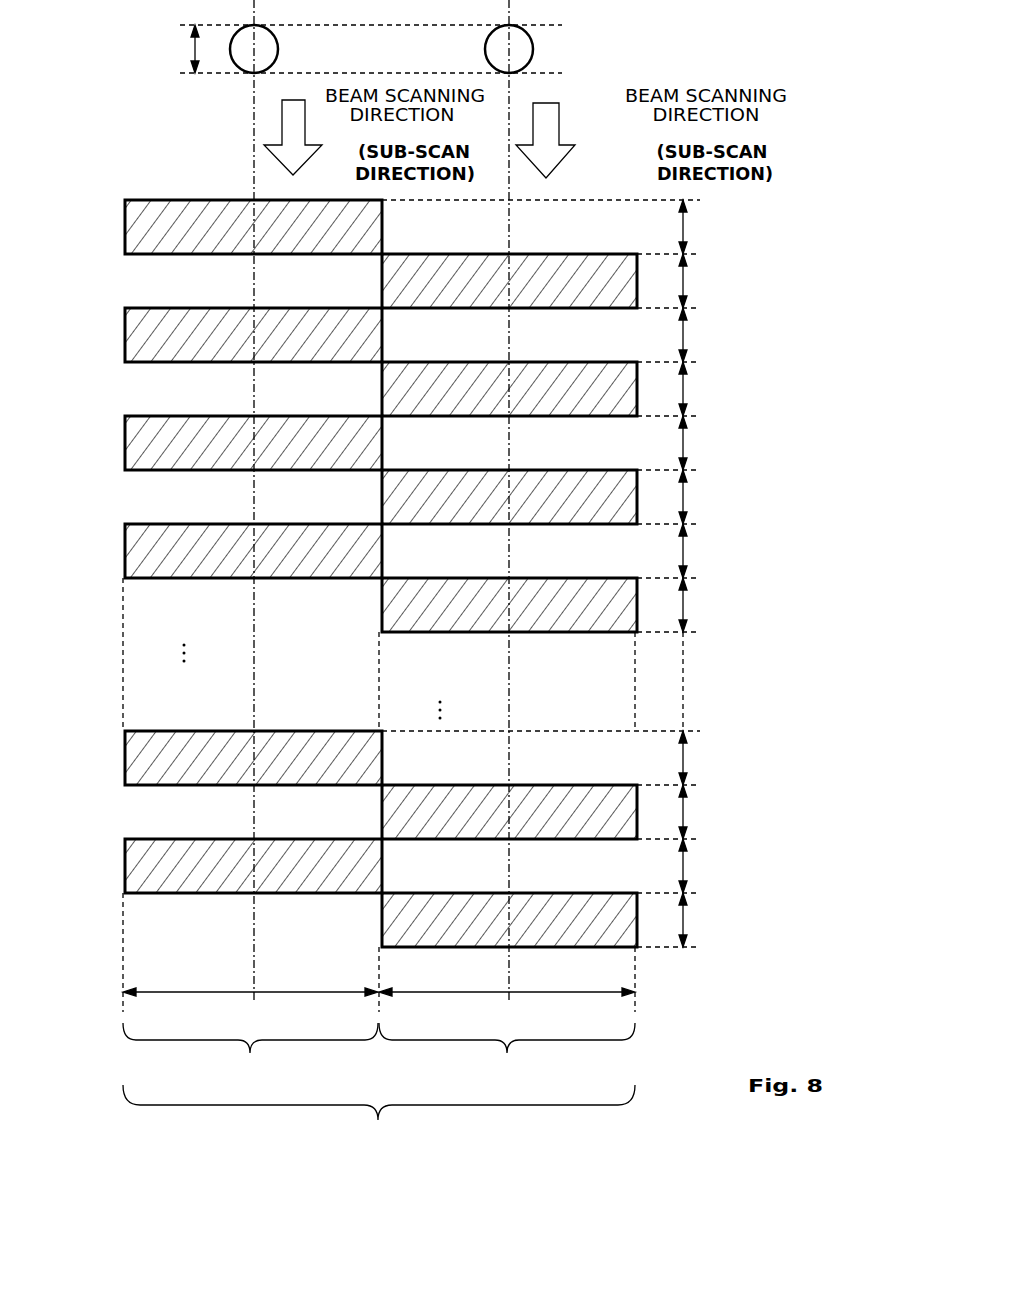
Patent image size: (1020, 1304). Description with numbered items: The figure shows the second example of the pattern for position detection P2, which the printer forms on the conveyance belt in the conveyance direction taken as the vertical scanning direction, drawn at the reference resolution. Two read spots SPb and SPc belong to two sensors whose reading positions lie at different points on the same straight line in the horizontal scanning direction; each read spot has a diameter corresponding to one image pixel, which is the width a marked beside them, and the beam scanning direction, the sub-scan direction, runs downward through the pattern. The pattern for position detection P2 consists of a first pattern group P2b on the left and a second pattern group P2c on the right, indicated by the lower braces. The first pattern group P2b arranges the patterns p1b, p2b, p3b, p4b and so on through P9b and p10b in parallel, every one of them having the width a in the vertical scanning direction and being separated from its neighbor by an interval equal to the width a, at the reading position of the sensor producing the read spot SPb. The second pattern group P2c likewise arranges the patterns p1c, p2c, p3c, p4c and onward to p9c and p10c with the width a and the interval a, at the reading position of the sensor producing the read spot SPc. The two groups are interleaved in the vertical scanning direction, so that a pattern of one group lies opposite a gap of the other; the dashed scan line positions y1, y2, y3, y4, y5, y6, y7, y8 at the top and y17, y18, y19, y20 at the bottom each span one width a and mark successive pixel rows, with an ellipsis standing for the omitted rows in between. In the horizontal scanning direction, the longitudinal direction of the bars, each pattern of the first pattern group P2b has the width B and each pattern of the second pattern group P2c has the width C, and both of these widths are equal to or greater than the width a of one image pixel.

The read spot SPb is at (279, 46).
The read spot SPc is at (534, 46).
The width a is at (186, 49).
The pattern p1b is at (123, 230).
The pattern p2b is at (123, 338).
The pattern p3b is at (123, 446).
The pattern p4b is at (123, 554).
The pattern P9b is at (123, 761).
The pattern p10b is at (123, 869).
The pattern p1c is at (590, 252).
The pattern p2c is at (590, 360).
The pattern p3c is at (590, 468).
The pattern p4c is at (590, 576).
The pattern p9c is at (590, 783).
The pattern p10c is at (590, 891).
The scan line position y1 is at (692, 227).
The scan line position y2 is at (692, 281).
The scan line position y3 is at (692, 335).
The scan line position y4 is at (692, 389).
The scan line position y5 is at (692, 443).
The scan line position y6 is at (692, 497).
The scan line position y7 is at (692, 551).
The scan line position y8 is at (692, 605).
The scan line position y17 is at (698, 758).
The scan line position y18 is at (698, 812).
The scan line position y19 is at (698, 866).
The scan line position y20 is at (698, 920).
The width B is at (250, 1003).
The width C is at (507, 1003).
The first pattern group P2b is at (250, 1055).
The second pattern group P2c is at (507, 1055).
The pattern for position detection P2 is at (379, 1118).